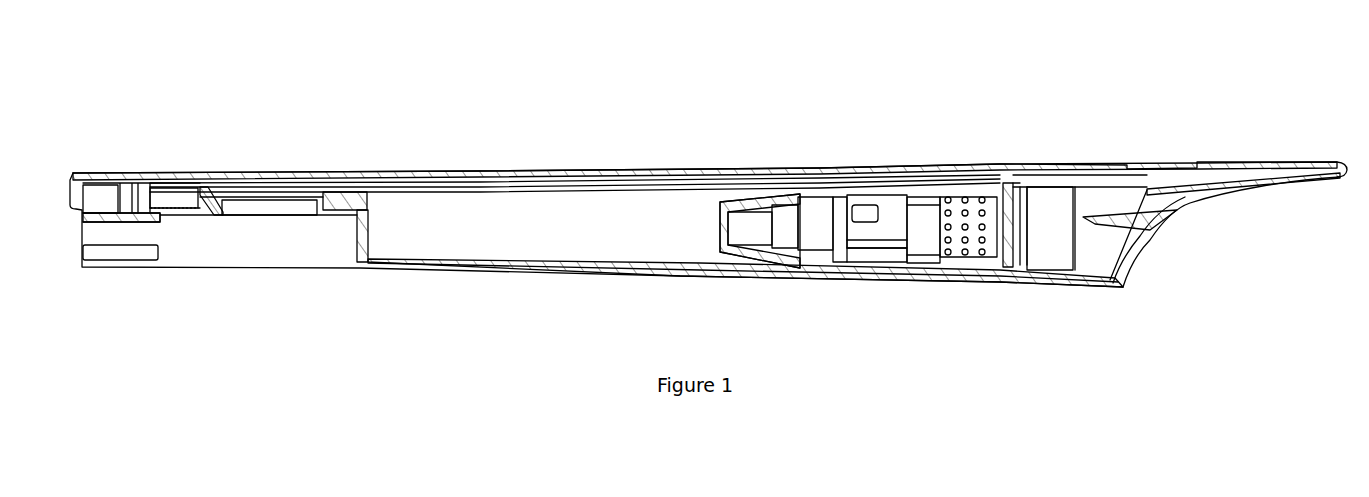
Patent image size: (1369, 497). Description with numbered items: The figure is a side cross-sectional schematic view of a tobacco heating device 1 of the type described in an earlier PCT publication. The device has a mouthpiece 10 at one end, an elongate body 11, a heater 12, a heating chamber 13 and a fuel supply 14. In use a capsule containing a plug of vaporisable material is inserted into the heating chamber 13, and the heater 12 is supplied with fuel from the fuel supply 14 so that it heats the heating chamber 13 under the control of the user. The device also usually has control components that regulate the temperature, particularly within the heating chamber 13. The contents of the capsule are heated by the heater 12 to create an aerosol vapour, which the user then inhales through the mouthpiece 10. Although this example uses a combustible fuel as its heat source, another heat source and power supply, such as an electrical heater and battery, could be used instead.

The tobacco heating device 1 is at (708, 224).
The mouthpiece 10 is at (1190, 205).
The body 11 is at (507, 170).
The heater 12 is at (957, 212).
The heating chamber 13 is at (1055, 212).
The fuel supply 14 is at (890, 208).